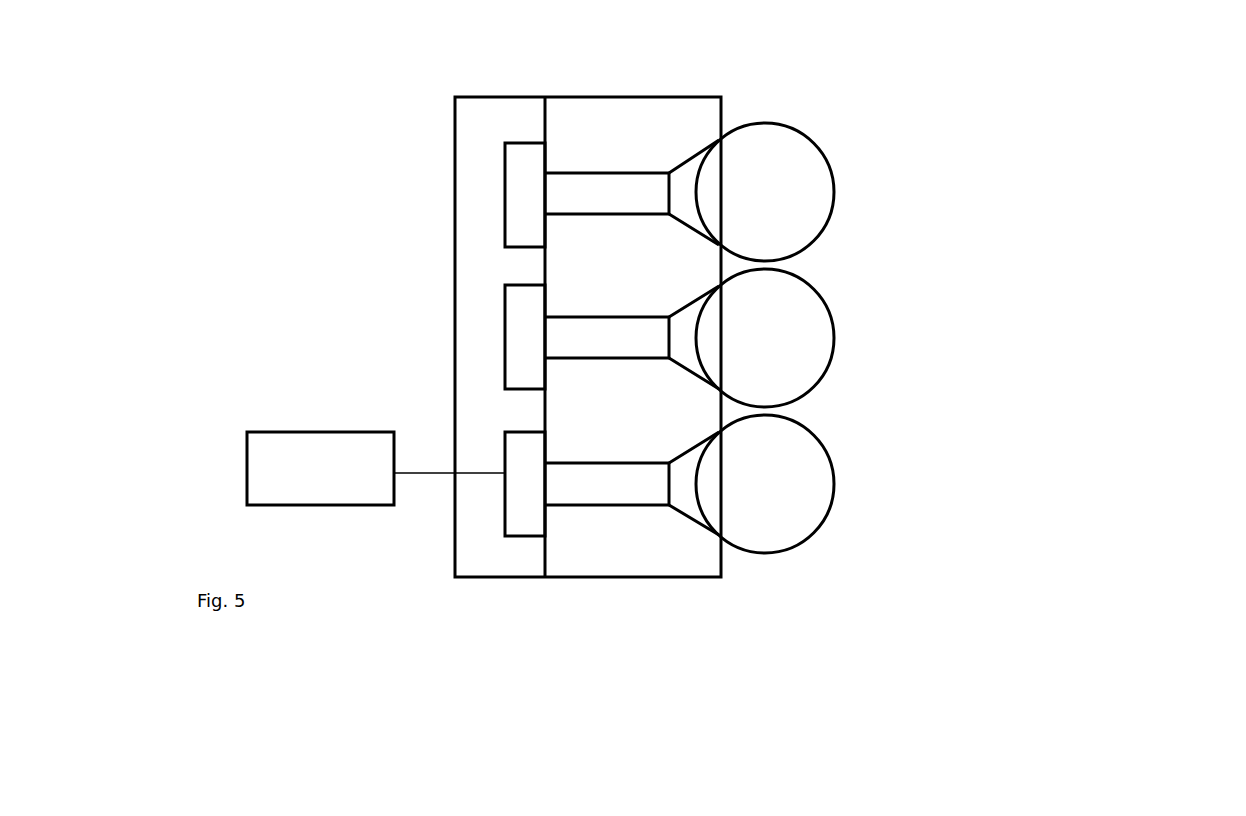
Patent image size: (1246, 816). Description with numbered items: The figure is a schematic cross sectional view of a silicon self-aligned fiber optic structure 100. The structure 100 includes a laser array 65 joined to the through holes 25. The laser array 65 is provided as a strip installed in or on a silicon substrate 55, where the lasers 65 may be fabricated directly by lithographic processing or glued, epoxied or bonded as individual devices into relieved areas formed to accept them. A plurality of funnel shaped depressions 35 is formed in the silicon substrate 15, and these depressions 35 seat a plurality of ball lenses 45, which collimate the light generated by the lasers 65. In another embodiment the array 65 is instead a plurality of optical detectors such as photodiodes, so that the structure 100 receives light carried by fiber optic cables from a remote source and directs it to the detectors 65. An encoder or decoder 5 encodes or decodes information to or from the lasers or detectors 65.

The silicon self-aligned fiber optic structure 100 is at (1081, 634).
The encoder or decoder 5 is at (348, 450).
The silicon substrate 15 is at (693, 111).
The through holes 25 is at (610, 178).
The funnel shaped depressions 35 is at (697, 155).
The ball lenses 45 is at (795, 173).
The silicon substrate 55 is at (482, 180).
The laser array 65 is at (505, 315).